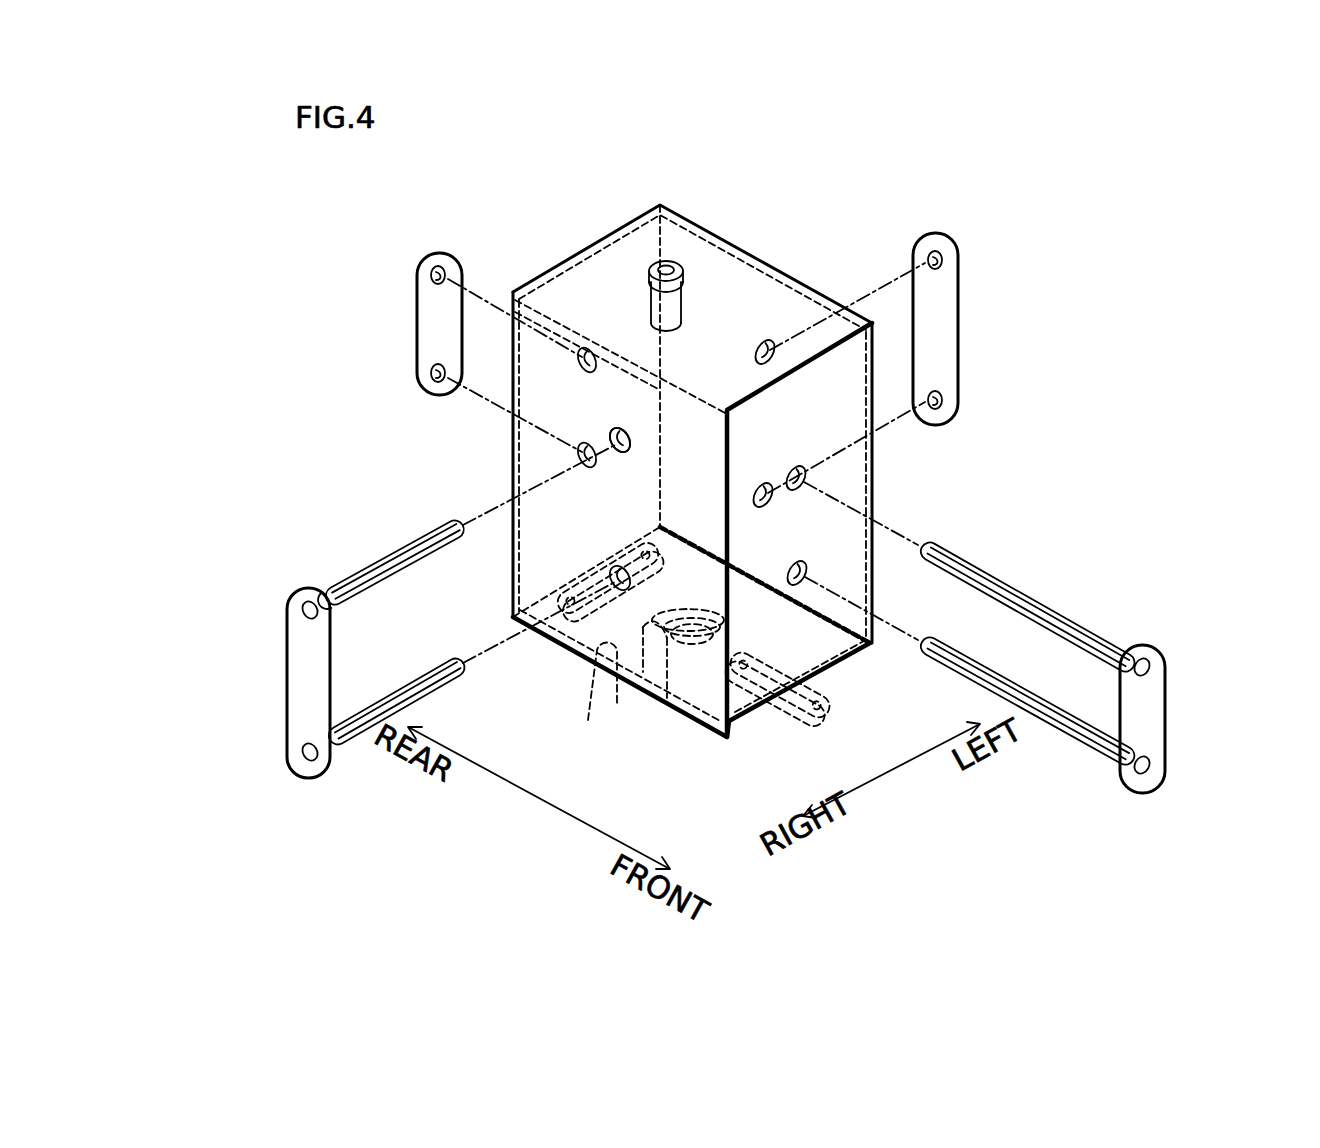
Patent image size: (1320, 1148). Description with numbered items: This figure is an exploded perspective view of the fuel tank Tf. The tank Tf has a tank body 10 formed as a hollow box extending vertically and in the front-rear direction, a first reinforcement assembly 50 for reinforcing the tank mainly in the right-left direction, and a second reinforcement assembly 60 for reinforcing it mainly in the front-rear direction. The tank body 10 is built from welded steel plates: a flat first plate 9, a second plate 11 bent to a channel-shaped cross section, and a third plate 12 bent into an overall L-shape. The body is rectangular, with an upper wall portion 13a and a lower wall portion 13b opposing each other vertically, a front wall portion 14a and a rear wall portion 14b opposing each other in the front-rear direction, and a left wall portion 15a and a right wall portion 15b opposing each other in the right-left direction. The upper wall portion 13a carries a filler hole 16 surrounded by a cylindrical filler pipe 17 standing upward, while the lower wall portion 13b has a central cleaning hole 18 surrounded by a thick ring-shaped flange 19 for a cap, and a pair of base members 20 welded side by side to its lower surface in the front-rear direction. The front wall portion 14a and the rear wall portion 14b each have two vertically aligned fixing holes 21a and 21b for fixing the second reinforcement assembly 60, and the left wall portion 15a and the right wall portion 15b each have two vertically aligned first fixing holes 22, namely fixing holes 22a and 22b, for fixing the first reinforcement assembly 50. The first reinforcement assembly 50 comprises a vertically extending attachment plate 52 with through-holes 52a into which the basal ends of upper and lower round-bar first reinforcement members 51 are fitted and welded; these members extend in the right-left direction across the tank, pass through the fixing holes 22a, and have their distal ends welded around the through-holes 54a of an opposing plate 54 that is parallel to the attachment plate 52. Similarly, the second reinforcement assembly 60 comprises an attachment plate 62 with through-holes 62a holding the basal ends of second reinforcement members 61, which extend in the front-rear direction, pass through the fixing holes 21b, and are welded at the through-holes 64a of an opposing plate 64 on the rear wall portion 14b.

The fuel tank Tf is at (890, 181).
The first plate 9 is at (873, 571).
The tank body 10 is at (560, 233).
The second plate 11 is at (862, 647).
The third plate 12 is at (707, 728).
The upper wall portion 13a is at (677, 236).
The lower wall portion 13b is at (596, 668).
The front wall portion 14a is at (845, 380).
The rear wall portion 14b is at (634, 248).
The left wall portion 15a is at (797, 280).
The right wall portion 15b is at (694, 680).
The filler hole 16 is at (684, 300).
The filler pipe 17 is at (684, 296).
The cleaning hole 18 is at (642, 646).
The ring-shaped flange 19 is at (670, 678).
The base members 20 is at (556, 640).
The fixing holes 21a is at (802, 479).
The fixing holes 21b is at (583, 357).
The holes 22 is at (540, 525).
The fixing holes 22a is at (767, 490).
The fixing holes 22b is at (614, 449).
The first reinforcement assembly 50 is at (215, 622).
The first reinforcement members 51 is at (322, 620).
The attachment plate 52 is at (297, 680).
The through-holes 52a is at (305, 605).
The opposing plate 54 is at (945, 320).
The through-holes 54a is at (945, 262).
The second reinforcement assembly 60 is at (1220, 665).
The second reinforcement members 61 is at (1150, 683).
The attachment plate 62 is at (1148, 714).
The through-holes 62a is at (1146, 664).
The opposing plate 64 is at (425, 318).
The through-holes 64a is at (430, 272).